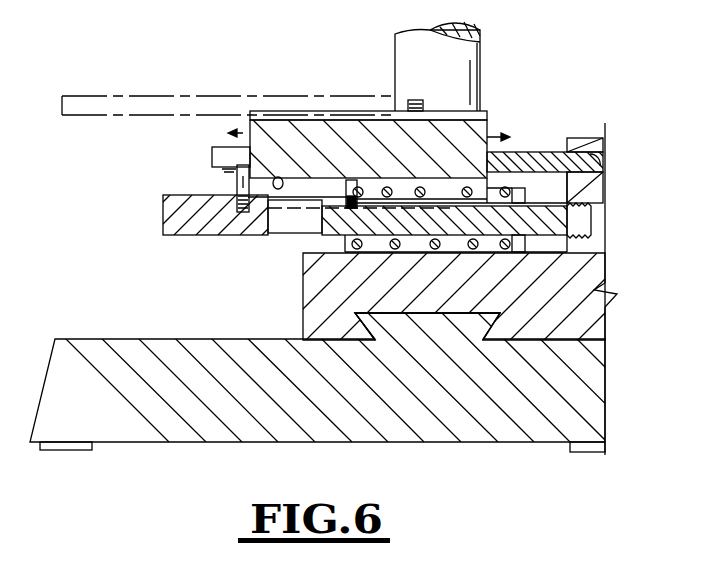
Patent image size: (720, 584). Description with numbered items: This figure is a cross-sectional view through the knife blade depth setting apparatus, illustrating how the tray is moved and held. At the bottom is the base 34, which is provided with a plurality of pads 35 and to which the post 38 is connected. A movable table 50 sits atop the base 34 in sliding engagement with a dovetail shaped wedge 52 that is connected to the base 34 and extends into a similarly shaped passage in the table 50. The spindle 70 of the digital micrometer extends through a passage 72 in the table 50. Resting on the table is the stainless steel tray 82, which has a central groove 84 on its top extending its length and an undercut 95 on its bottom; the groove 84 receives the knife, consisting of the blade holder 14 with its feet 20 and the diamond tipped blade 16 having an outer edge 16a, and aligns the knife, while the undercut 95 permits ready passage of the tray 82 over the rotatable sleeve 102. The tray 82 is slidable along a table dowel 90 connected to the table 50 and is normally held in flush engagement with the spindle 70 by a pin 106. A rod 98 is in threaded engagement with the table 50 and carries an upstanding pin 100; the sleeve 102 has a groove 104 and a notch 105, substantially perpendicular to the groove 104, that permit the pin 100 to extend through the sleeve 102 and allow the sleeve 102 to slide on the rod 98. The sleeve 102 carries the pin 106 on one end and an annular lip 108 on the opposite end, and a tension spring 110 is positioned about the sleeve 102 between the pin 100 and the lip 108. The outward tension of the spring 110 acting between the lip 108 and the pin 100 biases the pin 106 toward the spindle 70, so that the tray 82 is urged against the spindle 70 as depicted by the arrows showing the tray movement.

The blade holder 14 is at (208, 96).
The diamond tipped blade 16 is at (430, 107).
The outer edge 16a is at (431, 104).
The feet 20 is at (424, 100).
The base 34 is at (158, 339).
The pads 35 is at (62, 448).
The post 38 is at (482, 52).
The movable table 50 is at (310, 283).
The dovetail shaped wedge 52 is at (355, 318).
The spindle 70 is at (552, 152).
The passage 72 is at (606, 162).
The tray 82 is at (352, 128).
The central groove 84 is at (284, 112).
The table dowel 90 is at (218, 147).
The undercut 95 is at (275, 177).
The rod 98 is at (560, 220).
The upstanding pin 100 is at (348, 195).
The rotatable sleeve 102 is at (197, 237).
The groove 104 is at (315, 190).
The notch 105 is at (375, 188).
The pin 106 is at (237, 173).
The annular lip 108 is at (518, 188).
The tension spring 110 is at (420, 190).